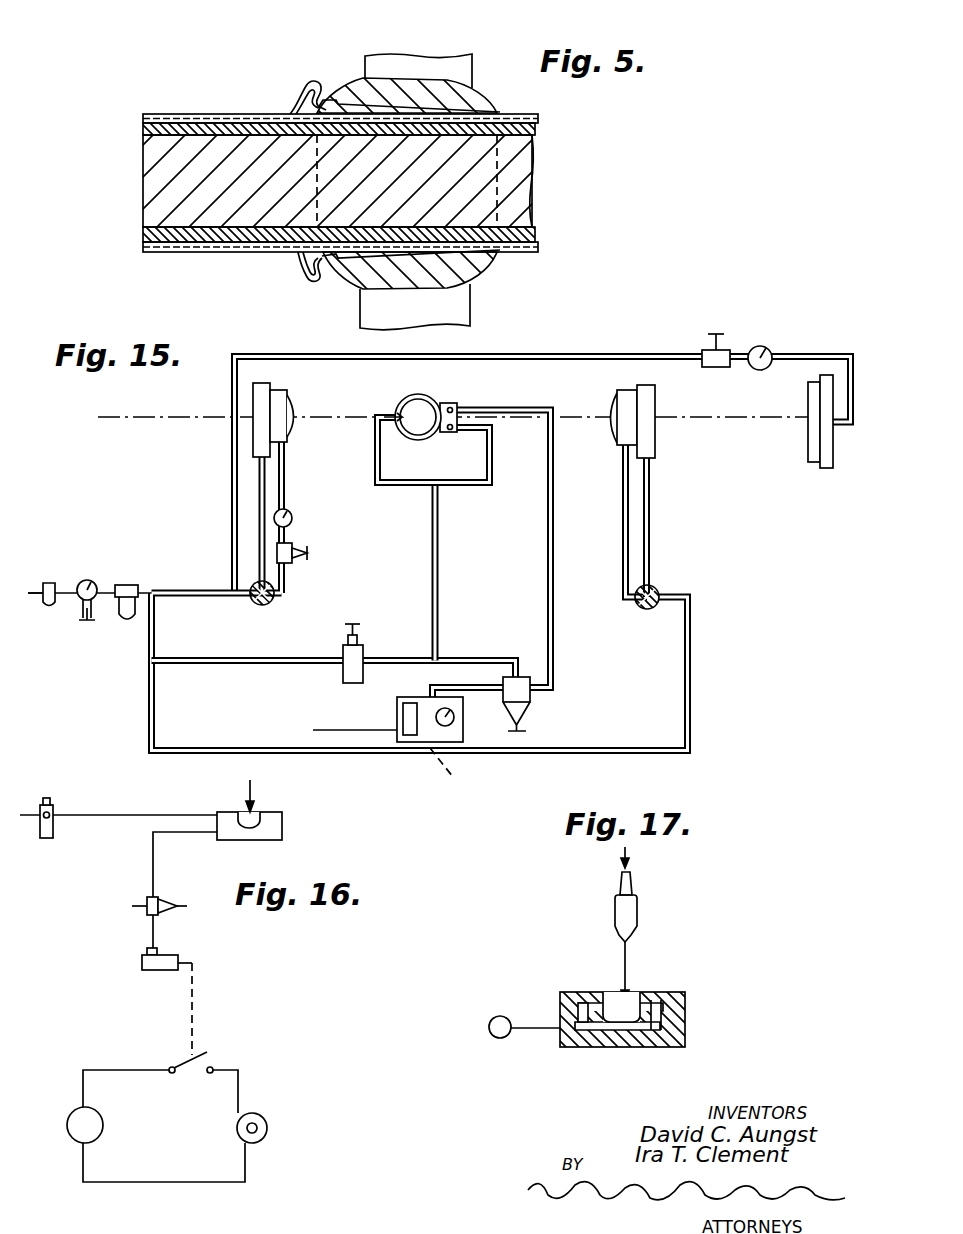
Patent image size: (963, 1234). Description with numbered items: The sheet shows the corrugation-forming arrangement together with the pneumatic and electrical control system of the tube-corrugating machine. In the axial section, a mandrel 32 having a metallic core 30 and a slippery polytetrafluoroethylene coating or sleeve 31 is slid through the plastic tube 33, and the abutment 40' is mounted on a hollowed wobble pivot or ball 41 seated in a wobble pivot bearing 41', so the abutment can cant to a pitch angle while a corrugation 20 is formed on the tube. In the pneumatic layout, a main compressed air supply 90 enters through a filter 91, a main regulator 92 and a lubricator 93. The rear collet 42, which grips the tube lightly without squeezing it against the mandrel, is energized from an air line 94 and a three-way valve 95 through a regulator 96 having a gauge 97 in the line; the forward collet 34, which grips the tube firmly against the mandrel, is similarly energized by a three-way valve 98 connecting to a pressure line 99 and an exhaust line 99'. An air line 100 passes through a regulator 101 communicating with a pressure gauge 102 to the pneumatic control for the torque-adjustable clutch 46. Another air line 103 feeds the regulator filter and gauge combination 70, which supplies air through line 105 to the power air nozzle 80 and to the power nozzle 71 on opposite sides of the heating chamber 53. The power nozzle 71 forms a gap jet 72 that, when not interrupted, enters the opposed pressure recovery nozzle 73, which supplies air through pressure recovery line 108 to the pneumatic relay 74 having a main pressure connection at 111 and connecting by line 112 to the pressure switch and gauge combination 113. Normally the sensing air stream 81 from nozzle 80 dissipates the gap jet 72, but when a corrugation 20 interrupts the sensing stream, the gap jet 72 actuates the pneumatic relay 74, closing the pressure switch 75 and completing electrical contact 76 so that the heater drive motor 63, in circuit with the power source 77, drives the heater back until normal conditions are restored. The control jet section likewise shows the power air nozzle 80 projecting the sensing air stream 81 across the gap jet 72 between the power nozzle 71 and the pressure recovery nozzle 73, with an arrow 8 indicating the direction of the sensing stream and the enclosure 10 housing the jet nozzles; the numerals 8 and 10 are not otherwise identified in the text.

In FIG. 16, the arrow indicating test direction 8 is at (245, 788).
In FIG. 15, the test chamber box 10 is at (492, 468).
In FIG. 5, the corrugation 20 is at (312, 82).
In FIG. 5, the metallic core 30 is at (262, 207).
In FIG. 5, the coating or sleeve 31 is at (232, 136).
In FIG. 5, the mandrel 32 is at (522, 188).
In FIG. 5, the plastic tube 33 is at (247, 97).
In FIG. 15, the collet 34 is at (630, 411).
In FIG. 5, the abutment 40' is at (409, 140).
In FIG. 5, the wobble pivot or ball 41 is at (411, 181).
In FIG. 5, the wobble pivot bearing 41' is at (416, 175).
In FIG. 15, the collet 42 is at (294, 410).
In FIG. 15, the clutch 46 is at (812, 438).
In FIG. 15, the heating chamber 53 is at (430, 398).
In FIG. 16, the heater drive motor 63 is at (82, 1117).
In FIG. 15, the pressure regulator 70 is at (364, 650).
In FIG. 16, the pressure regulator 70 is at (47, 839).
In FIG. 15, the power nozzle 71 is at (452, 433).
In FIG. 17, the power nozzle 71 is at (613, 997).
In FIG. 16, the gap jet 72 is at (262, 815).
In FIG. 17, the gap jet 72 is at (631, 998).
In FIG. 15, the pressure recovery nozzle 73 is at (458, 407).
In FIG. 16, the pressure recovery nozzle 73 is at (274, 813).
In FIG. 17, the pressure recovery nozzle 73 is at (644, 993).
In FIG. 15, the pneumatic relay 74 is at (531, 696).
In FIG. 16, the pneumatic relay 74 is at (152, 897).
In FIG. 17, the pneumatic relay 74 is at (498, 1038).
In FIG. 16, the pressure switch 75 is at (146, 958).
In FIG. 15, the electrical contact 76 is at (456, 769).
In FIG. 16, the electrical contact 76 is at (210, 1053).
In FIG. 16, the power source 77 is at (260, 1117).
In FIG. 15, the power air nozzle 80 is at (396, 416).
In FIG. 17, the power air nozzle 80 is at (627, 914).
In FIG. 16, the sensing air stream 81 is at (252, 810).
In FIG. 17, the sensing air stream 81 is at (627, 954).
In FIG. 15, the main compressed air supply 90 is at (35, 583).
In FIG. 15, the filter 91 is at (48, 607).
In FIG. 15, the main regulator 92 is at (90, 580).
In FIG. 15, the lubricator 93 is at (121, 620).
In FIG. 15, the air line 94 is at (260, 549).
In FIG. 15, the three-way valve 95 is at (269, 606).
In FIG. 15, the regulator 96 is at (310, 556).
In FIG. 15, the gauge 97 is at (293, 520).
In FIG. 15, the three-way valve 98 is at (660, 590).
In FIG. 15, the pressure line 99 is at (611, 521).
In FIG. 15, the exhaust line 99' is at (674, 527).
In FIG. 15, the air line 100 is at (643, 349).
In FIG. 15, the regulator 101 is at (720, 352).
In FIG. 15, the pressure gauge 102 is at (758, 371).
In FIG. 15, the air line 103 is at (245, 659).
In FIG. 15, the line 105 is at (376, 466).
In FIG. 15, the pressure recovery line 108 is at (552, 640).
In FIG. 15, the main pressure connection 111 is at (480, 658).
In FIG. 15, the line 112 is at (468, 685).
In FIG. 15, the pressure switch and gauge combination 113 is at (397, 706).